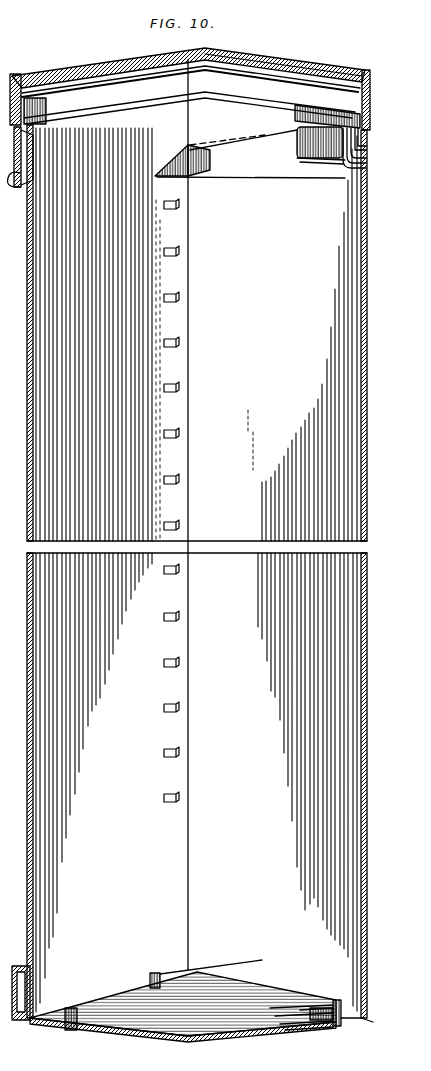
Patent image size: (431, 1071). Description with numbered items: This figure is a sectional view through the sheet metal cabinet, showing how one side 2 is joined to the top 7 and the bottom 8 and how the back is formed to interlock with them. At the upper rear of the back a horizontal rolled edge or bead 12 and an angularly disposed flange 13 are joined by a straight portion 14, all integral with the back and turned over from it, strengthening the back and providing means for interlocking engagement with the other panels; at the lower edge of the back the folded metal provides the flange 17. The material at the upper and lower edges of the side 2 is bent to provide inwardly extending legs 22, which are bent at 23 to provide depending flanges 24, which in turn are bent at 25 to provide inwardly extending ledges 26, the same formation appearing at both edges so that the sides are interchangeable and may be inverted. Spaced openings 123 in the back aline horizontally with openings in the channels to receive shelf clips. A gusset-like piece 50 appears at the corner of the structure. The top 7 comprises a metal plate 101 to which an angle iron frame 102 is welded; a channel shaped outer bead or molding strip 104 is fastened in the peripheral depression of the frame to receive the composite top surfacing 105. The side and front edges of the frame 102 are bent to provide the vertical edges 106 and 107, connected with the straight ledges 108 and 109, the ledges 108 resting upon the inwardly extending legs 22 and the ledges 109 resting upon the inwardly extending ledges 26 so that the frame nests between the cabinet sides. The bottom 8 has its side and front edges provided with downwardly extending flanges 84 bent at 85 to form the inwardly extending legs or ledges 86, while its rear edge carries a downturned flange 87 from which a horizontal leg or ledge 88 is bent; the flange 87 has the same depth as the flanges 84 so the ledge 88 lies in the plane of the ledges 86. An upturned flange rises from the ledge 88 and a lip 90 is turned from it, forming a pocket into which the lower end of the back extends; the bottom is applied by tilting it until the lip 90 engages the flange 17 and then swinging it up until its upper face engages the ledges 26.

The side 2 is at (362, 370).
The top 7 is at (228, 62).
The bottom 8 is at (130, 1030).
The horizontal rolled edge or bead 12 is at (36, 148).
The angularly disposed flange 13 is at (20, 186).
The straight portion 14 is at (34, 162).
The flange 17 is at (28, 468).
The inwardly extending legs 22 is at (366, 170).
The bend 23 is at (364, 165).
The depending flanges 24 is at (361, 160).
The bend 25 is at (357, 155).
The inwardly extending ledges 26 is at (352, 150).
The gusset bracket 50 is at (160, 168).
The downwardly extending flanges 84 is at (290, 1022).
The bend 85 is at (326, 1030).
The inwardly extending legs or ledges 86 is at (300, 1030).
The downturned flange 87 is at (72, 1030).
The horizontal leg or ledge 88 is at (40, 1024).
The lip 90 is at (30, 972).
The metal plate 101 is at (262, 67).
The angle iron frame 102 is at (312, 82).
The channel shaped outer bead or molding strip 104 is at (360, 76).
The composite top surfacing 105 is at (85, 74).
The vertical edge 106 is at (297, 111).
The vertical edge 107 is at (318, 152).
The straight ledge 108 is at (285, 138).
The straight ledge 109 is at (340, 160).
The spaced openings 123 is at (180, 390).